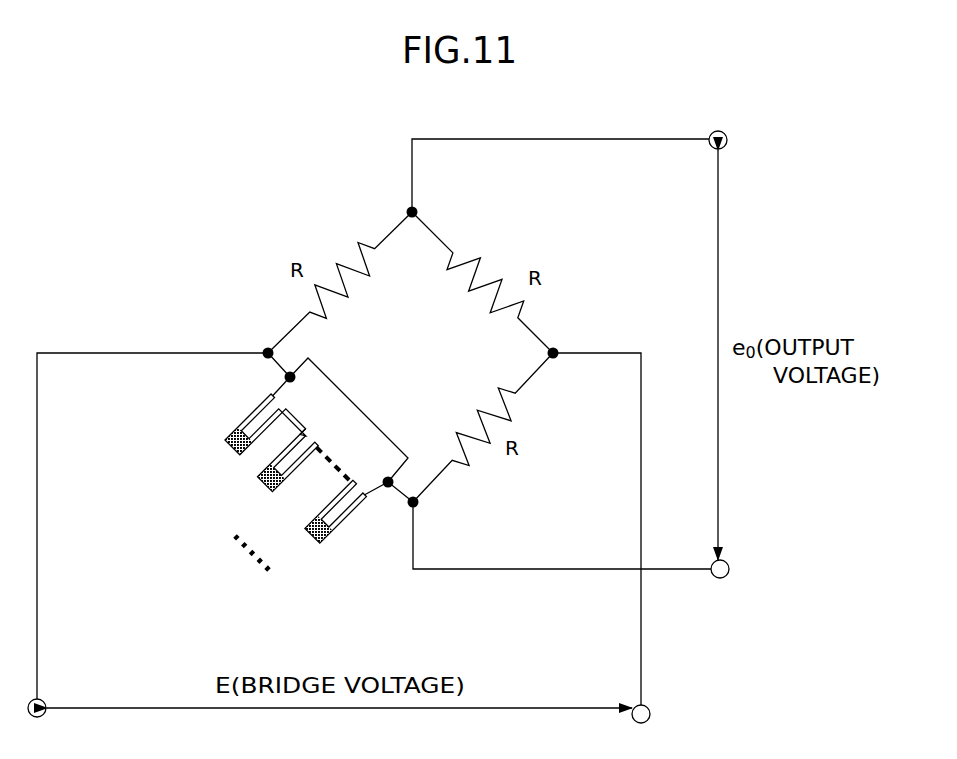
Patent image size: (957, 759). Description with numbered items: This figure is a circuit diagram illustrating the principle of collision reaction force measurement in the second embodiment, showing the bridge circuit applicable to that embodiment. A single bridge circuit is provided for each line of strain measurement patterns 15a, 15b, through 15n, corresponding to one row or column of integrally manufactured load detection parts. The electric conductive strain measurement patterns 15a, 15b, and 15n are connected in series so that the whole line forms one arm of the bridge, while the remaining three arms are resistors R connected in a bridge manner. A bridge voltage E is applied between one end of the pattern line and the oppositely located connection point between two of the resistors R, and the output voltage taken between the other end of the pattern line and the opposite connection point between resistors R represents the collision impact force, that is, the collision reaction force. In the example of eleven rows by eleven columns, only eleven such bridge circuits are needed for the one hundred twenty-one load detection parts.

The strain measurement pattern 15a is at (231, 445).
The strain measurement pattern 15b is at (269, 478).
The strain measurement pattern 15n is at (315, 542).